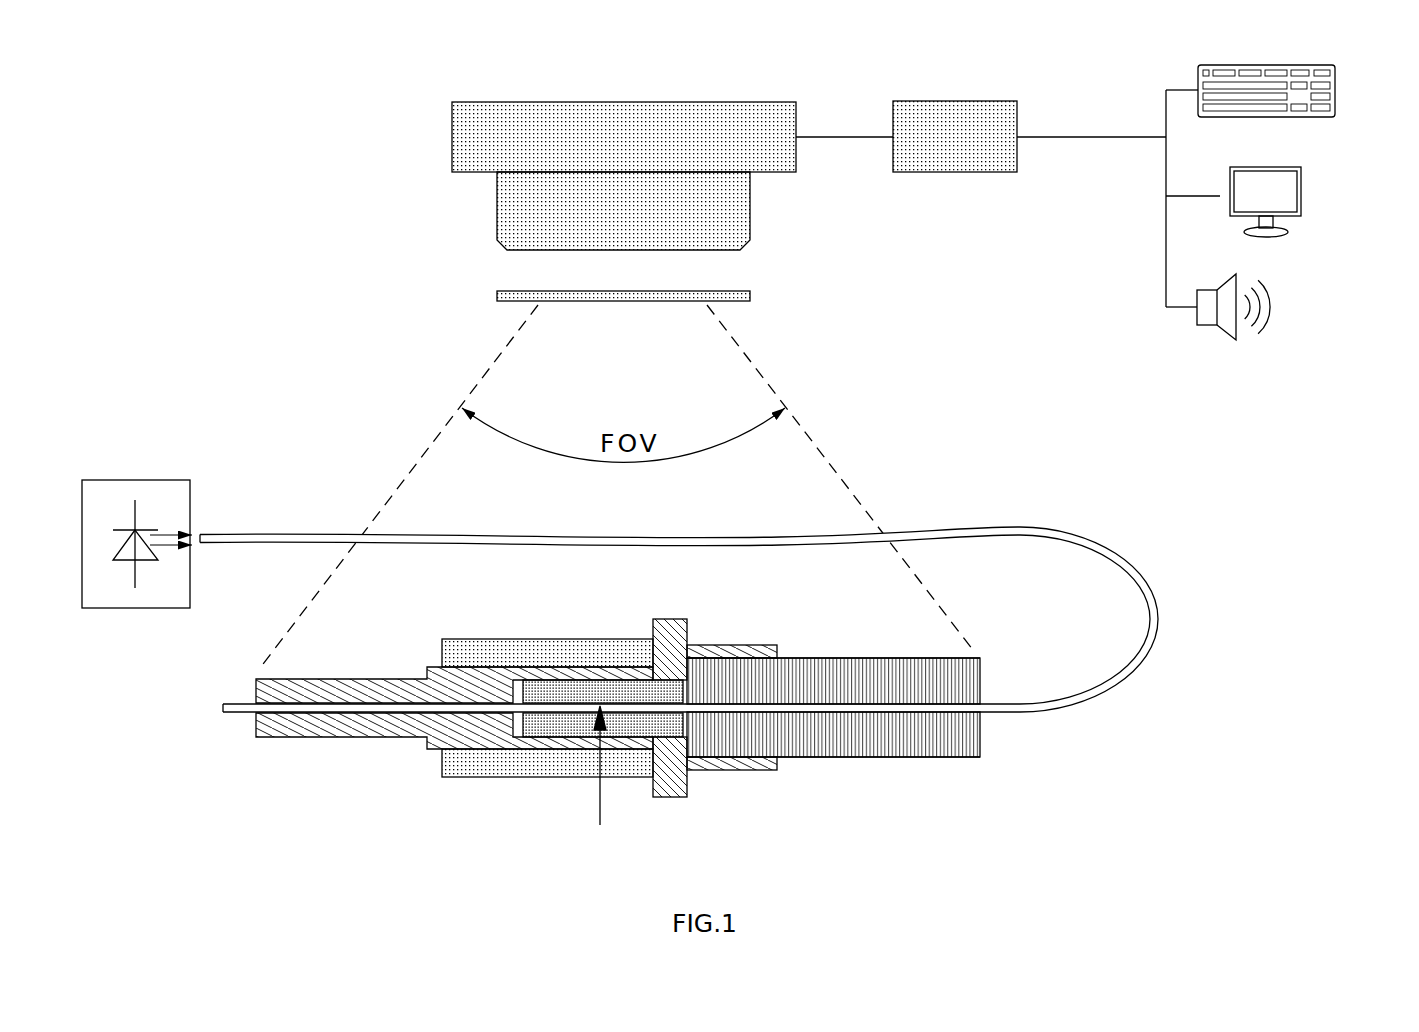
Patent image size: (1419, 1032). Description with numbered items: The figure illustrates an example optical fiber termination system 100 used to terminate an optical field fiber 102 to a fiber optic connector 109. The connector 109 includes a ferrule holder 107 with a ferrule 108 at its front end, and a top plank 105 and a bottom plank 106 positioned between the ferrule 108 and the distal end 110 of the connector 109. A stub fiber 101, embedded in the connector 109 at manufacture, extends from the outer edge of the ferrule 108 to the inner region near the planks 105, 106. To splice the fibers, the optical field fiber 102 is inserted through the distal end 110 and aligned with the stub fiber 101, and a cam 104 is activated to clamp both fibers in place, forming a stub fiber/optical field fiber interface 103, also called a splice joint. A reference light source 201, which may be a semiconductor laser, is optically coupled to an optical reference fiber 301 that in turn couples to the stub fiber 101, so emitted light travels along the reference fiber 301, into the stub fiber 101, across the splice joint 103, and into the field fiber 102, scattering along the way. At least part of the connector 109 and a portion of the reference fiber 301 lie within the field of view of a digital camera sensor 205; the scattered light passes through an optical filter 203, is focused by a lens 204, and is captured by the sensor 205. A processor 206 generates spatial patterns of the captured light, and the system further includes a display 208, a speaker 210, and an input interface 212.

The optical fiber termination system 100 is at (308, 127).
The stub fiber 101 is at (863, 707).
The optical field fiber 102 is at (235, 708).
The stub fiber/optical field fiber interface 103 is at (607, 782).
The cam 104 is at (528, 655).
The top plank 105 is at (586, 690).
The bottom plank 106 is at (548, 722).
The ferrule holder 107 is at (673, 777).
The ferrule 108 is at (806, 730).
The fiber optic connector 109 is at (992, 800).
The distal end 110 is at (262, 765).
The reference light source 201 is at (163, 497).
The optical filter 203 is at (737, 297).
The lens 204 is at (730, 205).
The digital camera sensor 205 is at (570, 108).
The processor 206 is at (938, 110).
The display 208 is at (1288, 200).
The speaker 210 is at (1207, 312).
The input interface 212 is at (1200, 78).
The optical reference fiber 301 is at (1077, 530).